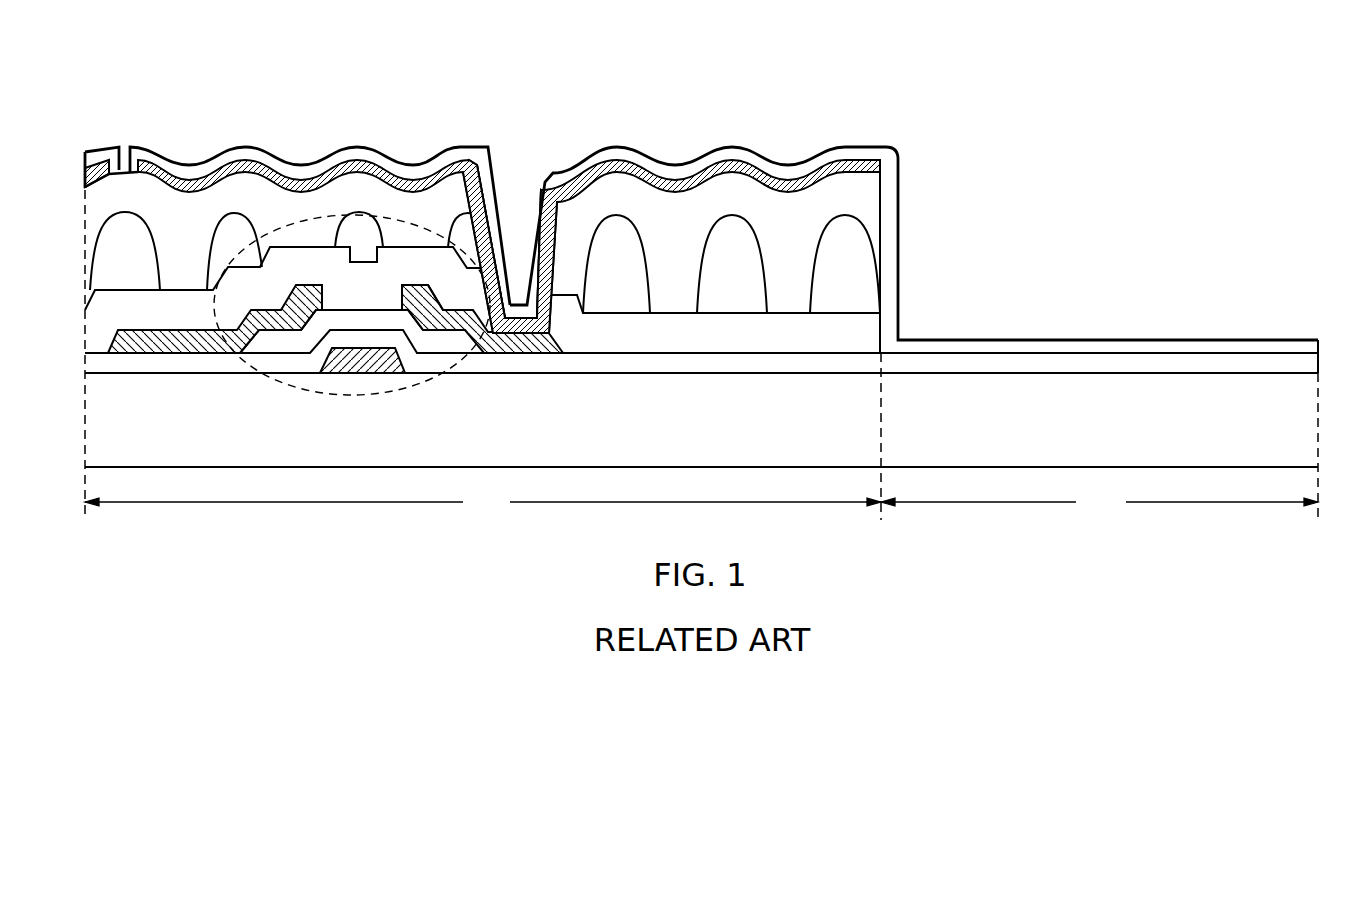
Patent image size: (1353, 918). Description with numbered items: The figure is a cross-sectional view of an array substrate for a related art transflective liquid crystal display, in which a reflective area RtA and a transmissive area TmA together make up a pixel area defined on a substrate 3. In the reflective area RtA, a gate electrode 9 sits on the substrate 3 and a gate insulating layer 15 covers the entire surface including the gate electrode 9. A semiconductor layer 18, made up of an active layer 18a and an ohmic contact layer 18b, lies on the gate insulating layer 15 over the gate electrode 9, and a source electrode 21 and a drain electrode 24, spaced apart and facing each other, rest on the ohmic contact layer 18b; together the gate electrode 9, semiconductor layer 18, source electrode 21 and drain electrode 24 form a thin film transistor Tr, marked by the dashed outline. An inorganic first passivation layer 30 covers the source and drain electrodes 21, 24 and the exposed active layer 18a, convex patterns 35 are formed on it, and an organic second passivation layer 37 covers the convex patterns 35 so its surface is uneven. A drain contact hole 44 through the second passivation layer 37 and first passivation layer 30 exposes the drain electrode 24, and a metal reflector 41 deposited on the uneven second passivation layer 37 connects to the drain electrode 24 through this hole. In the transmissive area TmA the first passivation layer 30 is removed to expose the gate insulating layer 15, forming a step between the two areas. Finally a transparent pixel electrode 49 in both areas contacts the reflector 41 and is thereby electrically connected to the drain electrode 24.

The substrate 3 is at (1265, 436).
The gate electrode 9 is at (363, 355).
The gate insulating layer 15 is at (975, 367).
The semiconductor layer 18 is at (335, 188).
The active layer 18a is at (396, 318).
The ohmic contact layer 18b is at (309, 298).
The source electrode 21 is at (271, 305).
The drain electrode 24 is at (521, 172).
The first passivation layer 30 is at (787, 328).
The convex patterns 35 is at (733, 232).
The second passivation layer 37 is at (787, 217).
The reflector 41 is at (667, 165).
The drain contact hole 44 is at (539, 188).
The pixel electrode 49 is at (181, 170).
The thin film transistor Tr is at (299, 396).
The reflective area RtA is at (483, 502).
The transmissive area TmA is at (1099, 502).